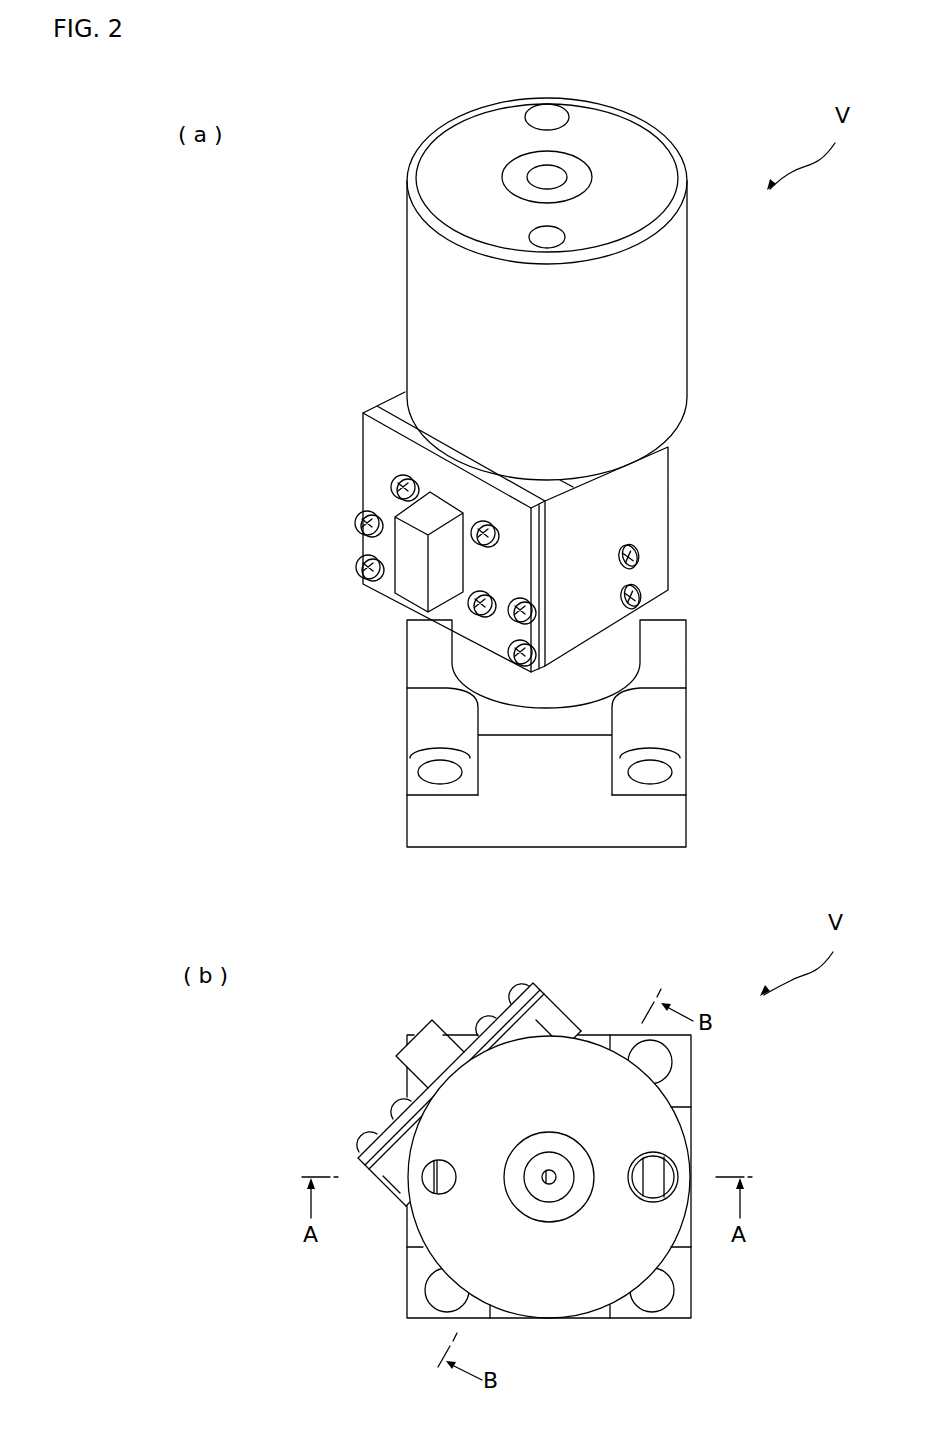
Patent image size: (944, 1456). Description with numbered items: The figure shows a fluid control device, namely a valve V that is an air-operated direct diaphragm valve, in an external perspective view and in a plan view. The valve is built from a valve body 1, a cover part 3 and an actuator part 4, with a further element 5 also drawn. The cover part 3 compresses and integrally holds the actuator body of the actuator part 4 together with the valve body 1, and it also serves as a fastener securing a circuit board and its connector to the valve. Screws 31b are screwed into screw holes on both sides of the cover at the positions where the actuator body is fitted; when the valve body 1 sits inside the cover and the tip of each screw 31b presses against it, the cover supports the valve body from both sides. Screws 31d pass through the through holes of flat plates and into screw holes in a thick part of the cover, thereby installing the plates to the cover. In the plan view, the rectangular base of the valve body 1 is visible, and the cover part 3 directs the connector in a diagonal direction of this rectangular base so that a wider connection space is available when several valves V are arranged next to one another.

The valve body 1 is at (686, 728).
The cover part 3 is at (670, 498).
The actuator part 4 is at (687, 320).
The box 5 is at (395, 517).
The screw 31b is at (640, 553).
The screw 31d is at (355, 523).